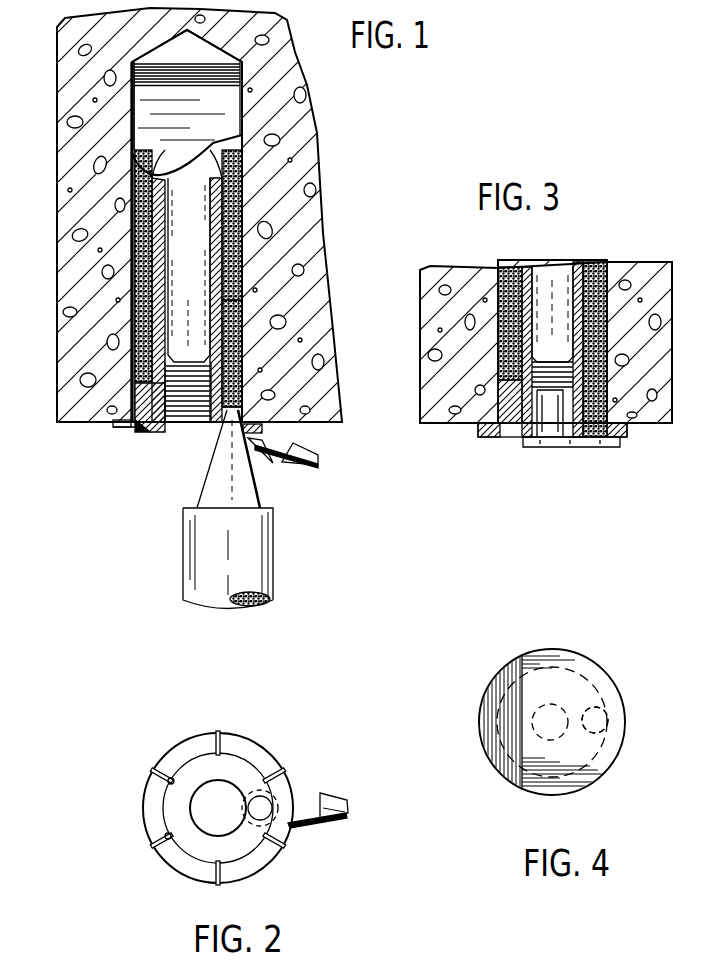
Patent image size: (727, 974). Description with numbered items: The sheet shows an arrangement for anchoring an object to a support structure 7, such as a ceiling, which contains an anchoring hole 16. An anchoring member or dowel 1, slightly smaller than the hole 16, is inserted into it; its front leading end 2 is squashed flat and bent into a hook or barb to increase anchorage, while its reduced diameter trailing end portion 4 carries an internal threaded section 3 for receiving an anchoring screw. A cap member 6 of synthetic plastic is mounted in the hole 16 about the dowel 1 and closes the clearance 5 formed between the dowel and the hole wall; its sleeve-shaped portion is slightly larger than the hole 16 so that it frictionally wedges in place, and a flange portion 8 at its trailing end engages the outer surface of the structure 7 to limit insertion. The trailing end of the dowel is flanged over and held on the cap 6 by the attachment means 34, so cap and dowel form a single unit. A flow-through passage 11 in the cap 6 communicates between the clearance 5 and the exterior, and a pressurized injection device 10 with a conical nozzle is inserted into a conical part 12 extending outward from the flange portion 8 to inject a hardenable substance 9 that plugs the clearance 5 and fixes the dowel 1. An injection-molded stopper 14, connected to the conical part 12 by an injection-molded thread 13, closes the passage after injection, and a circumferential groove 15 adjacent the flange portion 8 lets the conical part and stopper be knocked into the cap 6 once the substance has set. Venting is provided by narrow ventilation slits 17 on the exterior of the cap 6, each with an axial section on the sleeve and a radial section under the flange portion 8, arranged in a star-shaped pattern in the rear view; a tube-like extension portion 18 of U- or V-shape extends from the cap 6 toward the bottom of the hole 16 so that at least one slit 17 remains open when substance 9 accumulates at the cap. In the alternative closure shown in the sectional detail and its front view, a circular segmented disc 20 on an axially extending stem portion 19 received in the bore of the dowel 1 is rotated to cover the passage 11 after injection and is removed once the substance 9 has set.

In FIG. 1, the anchoring member or dowel 1 is at (218, 178).
In FIG. 3, the anchoring member or dowel 1 is at (588, 262).
In FIG. 1, the front leading end 2 is at (213, 108).
In FIG. 1, the internal threaded section 3 is at (185, 432).
In FIG. 1, the reduced diameter trailing end portion 4 is at (140, 446).
In FIG. 1, the clearance 5 is at (232, 228).
In FIG. 1, the cap member 6 is at (123, 420).
In FIG. 3, the cap member 6 is at (515, 432).
In FIG. 2, the cap member 6 is at (187, 772).
In FIG. 4, the cap member 6 is at (512, 748).
In FIG. 1, the support structure 7 is at (93, 175).
In FIG. 1, the flange portion 8 is at (258, 433).
In FIG. 3, the flange portion 8 is at (618, 432).
In FIG. 2, the flange portion 8 is at (253, 753).
In FIG. 1, the hardenable substance 9 is at (222, 320).
In FIG. 1, the pressurized injection device 10 is at (208, 550).
In FIG. 1, the flow-through passage 11 is at (232, 402).
In FIG. 3, the flow-through passage 11 is at (600, 400).
In FIG. 2, the flow-through passage 11 is at (265, 807).
In FIG. 1, the conical part 12 is at (212, 445).
In FIG. 1, the injection-molded thread 13 is at (252, 455).
In FIG. 2, the injection-molded thread 13 is at (308, 830).
In FIG. 1, the injection-molded stopper 14 is at (312, 460).
In FIG. 2, the injection-molded stopper 14 is at (347, 817).
In FIG. 1, the circumferential groove 15 is at (288, 455).
In FIG. 1, the anchoring hole 16 is at (215, 50).
In FIG. 1, the ventilation slits 17 is at (120, 421).
In FIG. 2, the ventilation slits 17 is at (158, 847).
In FIG. 1, the tube-like extension portion 18 is at (132, 332).
In FIG. 2, the tube-like extension portion 18 is at (170, 793).
In FIG. 3, the stem portion 19 is at (547, 427).
In FIG. 3, the circular segmented disc 20 is at (610, 450).
In FIG. 4, the circular segmented disc 20 is at (602, 760).
In FIG. 1, the attachment means 34 is at (150, 446).
In FIG. 3, the attachment means 34 is at (518, 440).